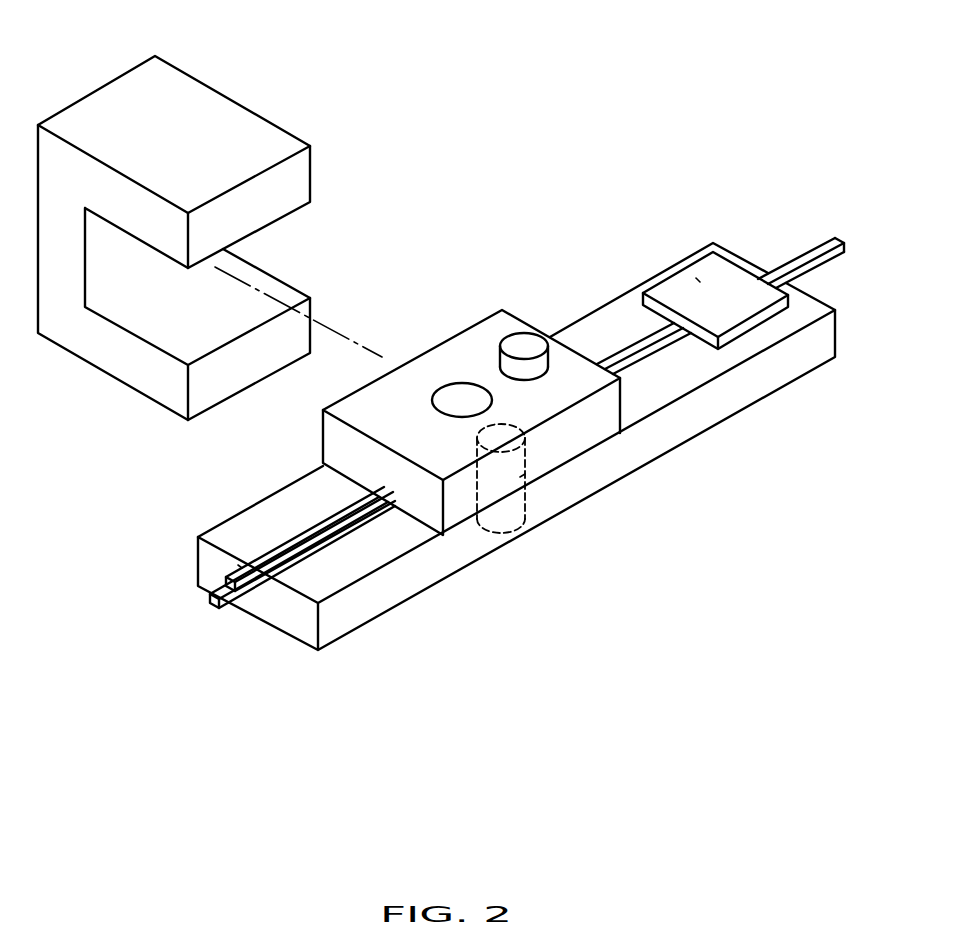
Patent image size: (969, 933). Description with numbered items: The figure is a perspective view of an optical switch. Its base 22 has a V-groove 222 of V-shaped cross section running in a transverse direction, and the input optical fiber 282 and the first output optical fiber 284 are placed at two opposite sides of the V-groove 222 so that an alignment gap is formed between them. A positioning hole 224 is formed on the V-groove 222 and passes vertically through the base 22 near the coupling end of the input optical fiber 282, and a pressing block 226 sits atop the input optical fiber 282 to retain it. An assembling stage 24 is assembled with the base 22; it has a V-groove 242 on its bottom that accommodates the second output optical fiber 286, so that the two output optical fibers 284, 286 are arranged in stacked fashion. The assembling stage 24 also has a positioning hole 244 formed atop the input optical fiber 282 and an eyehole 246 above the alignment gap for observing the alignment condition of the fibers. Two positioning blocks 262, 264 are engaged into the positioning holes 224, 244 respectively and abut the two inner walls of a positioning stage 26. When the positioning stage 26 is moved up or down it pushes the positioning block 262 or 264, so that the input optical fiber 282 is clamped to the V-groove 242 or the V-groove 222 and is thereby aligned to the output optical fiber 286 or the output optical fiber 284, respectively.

The base 22 is at (610, 468).
The assembling stage 24 is at (448, 513).
The positioning stage 26 is at (220, 120).
The V-groove 222 is at (763, 272).
The positioning hole 224 is at (525, 474).
The pressing block 226 is at (698, 280).
The V-groove 242 is at (372, 483).
The positioning hole 244 is at (493, 367).
The eyehole 246 is at (462, 380).
The positioning block 262 is at (503, 518).
The positioning block 264 is at (528, 338).
The input optical fiber 282 is at (808, 260).
The first output optical fiber 284 is at (220, 588).
The second output optical fiber 286 is at (240, 567).